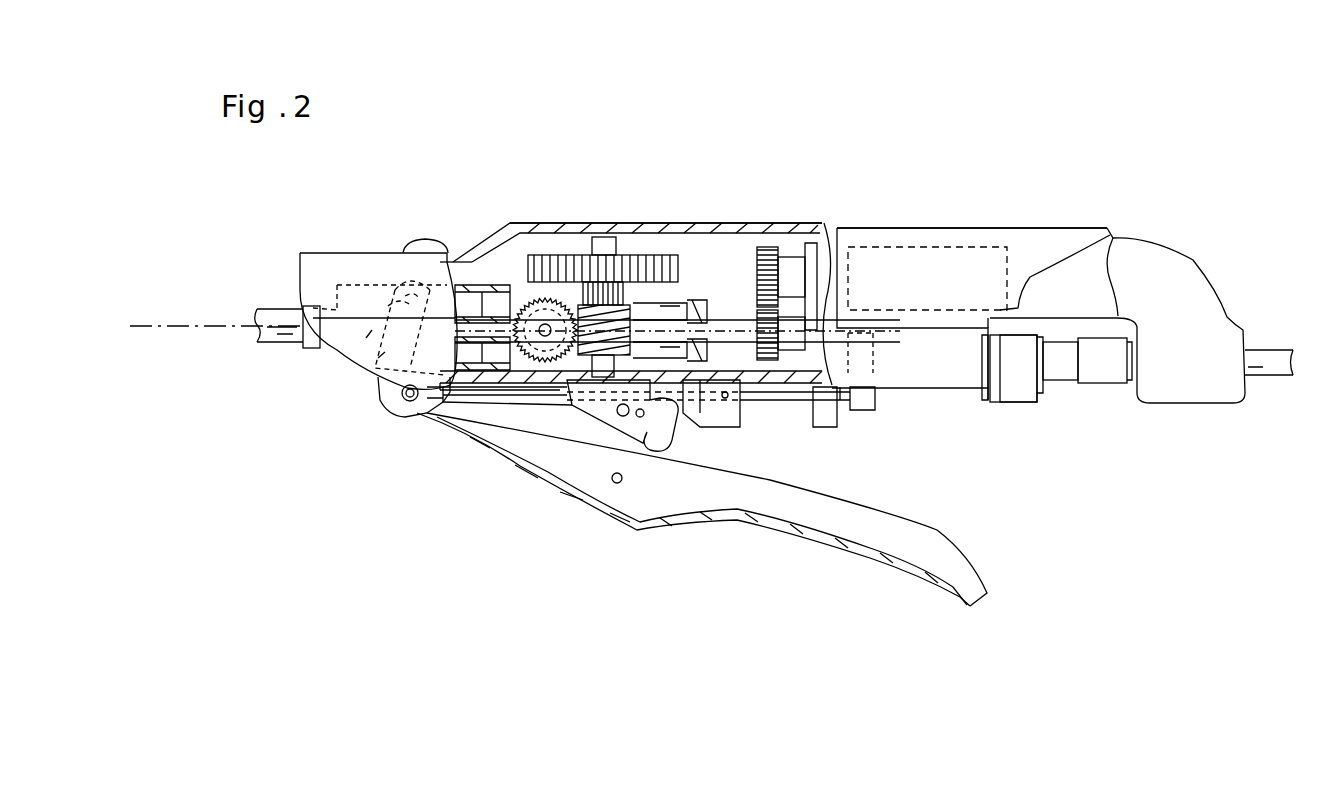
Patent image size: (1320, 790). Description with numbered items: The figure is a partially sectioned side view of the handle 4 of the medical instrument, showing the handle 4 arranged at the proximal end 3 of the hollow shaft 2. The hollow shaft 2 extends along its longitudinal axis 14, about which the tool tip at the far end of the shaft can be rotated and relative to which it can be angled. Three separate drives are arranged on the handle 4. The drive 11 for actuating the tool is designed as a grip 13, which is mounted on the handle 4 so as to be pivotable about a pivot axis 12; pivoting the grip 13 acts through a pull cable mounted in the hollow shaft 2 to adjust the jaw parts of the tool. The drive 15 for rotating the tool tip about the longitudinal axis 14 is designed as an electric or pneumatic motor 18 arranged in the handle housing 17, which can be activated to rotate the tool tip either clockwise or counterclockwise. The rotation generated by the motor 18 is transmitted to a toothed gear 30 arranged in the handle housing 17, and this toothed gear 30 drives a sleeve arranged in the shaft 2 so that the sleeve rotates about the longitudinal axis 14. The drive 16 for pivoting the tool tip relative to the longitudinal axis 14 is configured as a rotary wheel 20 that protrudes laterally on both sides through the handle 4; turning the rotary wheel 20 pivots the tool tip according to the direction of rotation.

The hollow shaft 2 is at (265, 315).
The proximal end 3 is at (305, 305).
The handle 4 is at (901, 157).
The drive 11 is at (443, 492).
The pivot axis 12 is at (338, 380).
The grip 13 is at (565, 475).
The longitudinal axis 14 is at (148, 332).
The drive 15 is at (955, 212).
The drive 16 is at (538, 203).
The handle housing 17 is at (1055, 235).
The motor 18 is at (880, 265).
The rotary wheel 20 is at (632, 254).
The toothed gear 30 is at (758, 248).